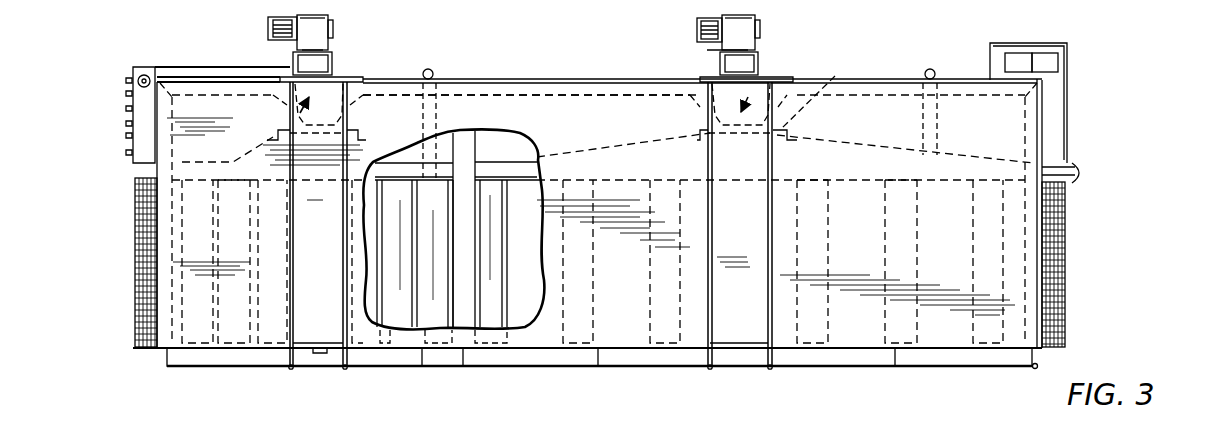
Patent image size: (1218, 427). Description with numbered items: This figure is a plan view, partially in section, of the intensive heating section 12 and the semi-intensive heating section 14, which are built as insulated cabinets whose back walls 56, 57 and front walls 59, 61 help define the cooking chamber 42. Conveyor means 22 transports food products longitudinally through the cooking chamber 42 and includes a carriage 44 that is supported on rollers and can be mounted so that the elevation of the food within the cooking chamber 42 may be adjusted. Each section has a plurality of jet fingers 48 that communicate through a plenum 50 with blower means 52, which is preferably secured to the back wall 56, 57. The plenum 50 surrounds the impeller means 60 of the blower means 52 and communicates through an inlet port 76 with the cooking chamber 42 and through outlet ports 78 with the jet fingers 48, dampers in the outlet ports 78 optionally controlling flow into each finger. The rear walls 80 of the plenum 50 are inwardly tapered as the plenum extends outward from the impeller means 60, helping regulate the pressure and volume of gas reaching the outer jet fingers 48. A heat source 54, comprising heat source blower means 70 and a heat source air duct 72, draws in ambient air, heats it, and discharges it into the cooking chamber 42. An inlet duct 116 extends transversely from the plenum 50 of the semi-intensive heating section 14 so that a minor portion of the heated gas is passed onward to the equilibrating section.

The intensive heating section 12 is at (148, 60).
The semi-intensive heating section 14 is at (1075, 97).
The conveyor means 22 is at (131, 311).
The cooking chamber 42 is at (617, 292).
The carriage 44 is at (135, 228).
The jet fingers 48 is at (232, 322).
The plenum 50 is at (365, 172).
The blower means 52 is at (288, 108).
The heat source 54 is at (690, 28).
The back wall 56 is at (490, 95).
The back wall 57 is at (541, 80).
The front wall 59 is at (422, 355).
The impeller means 60 is at (817, 93).
The front wall 61 is at (546, 366).
The heat source blower means 70 is at (318, 28).
The heat source air duct 72 is at (305, 60).
The inlet port 76 is at (376, 92).
The outlet ports 78 is at (235, 178).
The rear walls 80 is at (220, 150).
The inlet duct 116 is at (1068, 165).